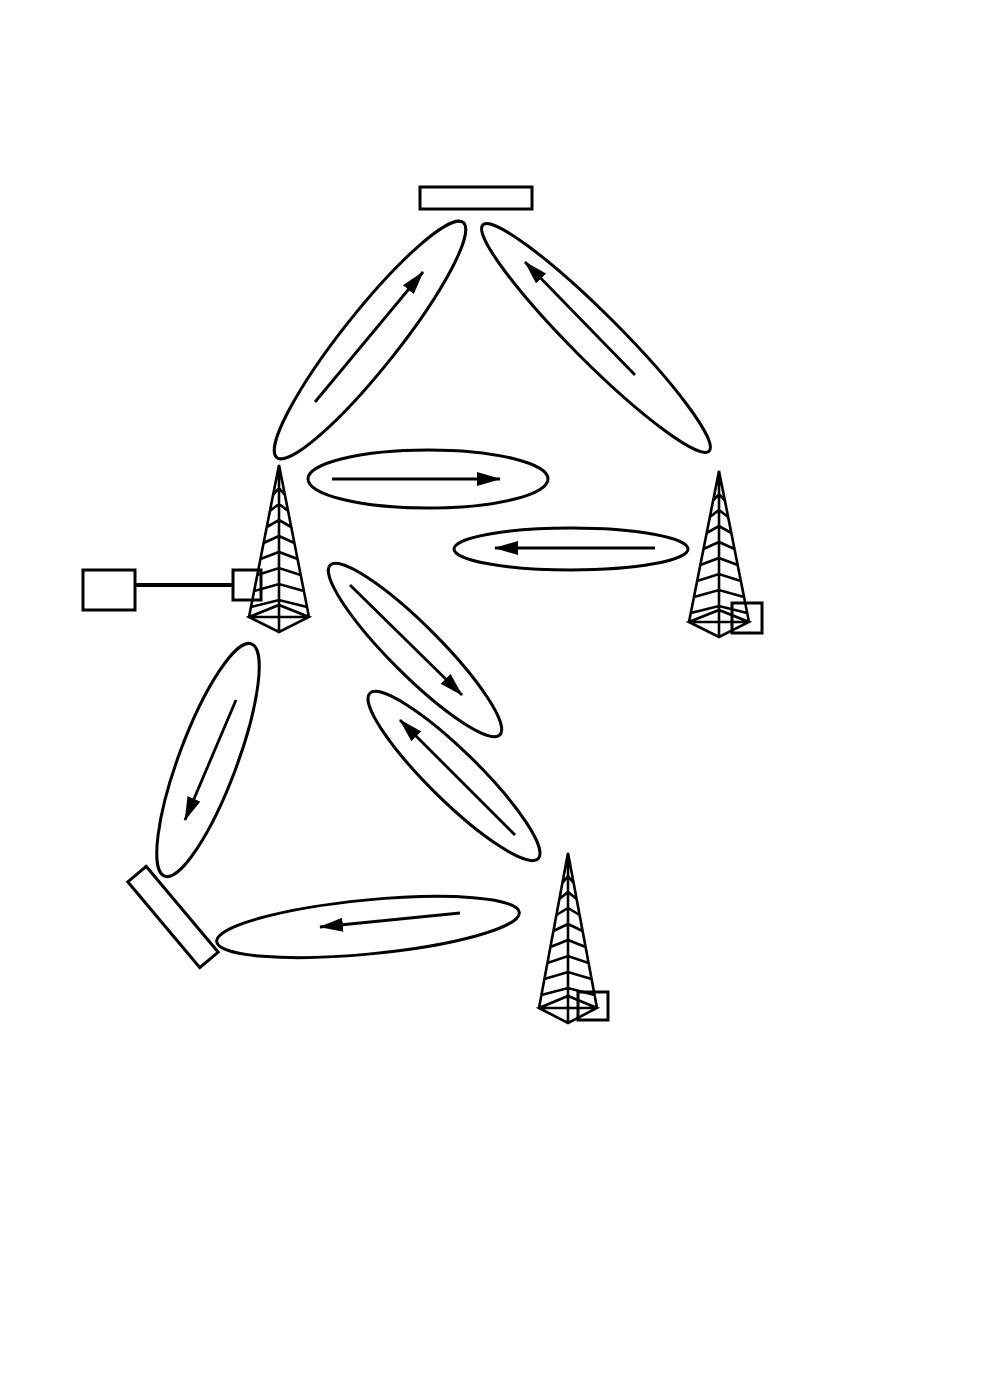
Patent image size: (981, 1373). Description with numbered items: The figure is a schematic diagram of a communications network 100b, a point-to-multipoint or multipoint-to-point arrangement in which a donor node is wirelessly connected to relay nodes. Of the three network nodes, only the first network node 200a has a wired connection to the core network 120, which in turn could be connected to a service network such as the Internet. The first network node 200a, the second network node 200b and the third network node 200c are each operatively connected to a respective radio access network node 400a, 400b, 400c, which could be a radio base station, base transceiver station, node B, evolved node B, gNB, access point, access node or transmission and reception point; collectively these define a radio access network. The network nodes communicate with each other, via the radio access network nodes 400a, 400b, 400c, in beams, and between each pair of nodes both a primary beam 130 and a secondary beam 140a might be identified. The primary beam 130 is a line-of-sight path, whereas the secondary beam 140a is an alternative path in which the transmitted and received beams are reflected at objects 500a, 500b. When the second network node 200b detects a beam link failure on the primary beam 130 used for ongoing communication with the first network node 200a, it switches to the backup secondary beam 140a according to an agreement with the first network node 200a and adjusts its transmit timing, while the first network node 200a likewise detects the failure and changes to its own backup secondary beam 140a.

The communications network 100b is at (150, 58).
The core network 120 is at (100, 604).
The primary beam 130 is at (545, 478).
The secondary beam 140a is at (705, 422).
The first network node 200a is at (240, 570).
The second network node 200b is at (762, 633).
The third network node 200c is at (609, 1016).
The radio access network node 400a is at (276, 476).
The radio access network node 400b is at (723, 482).
The radio access network node 400c is at (572, 865).
The object 500a is at (478, 197).
The object 500b is at (155, 918).